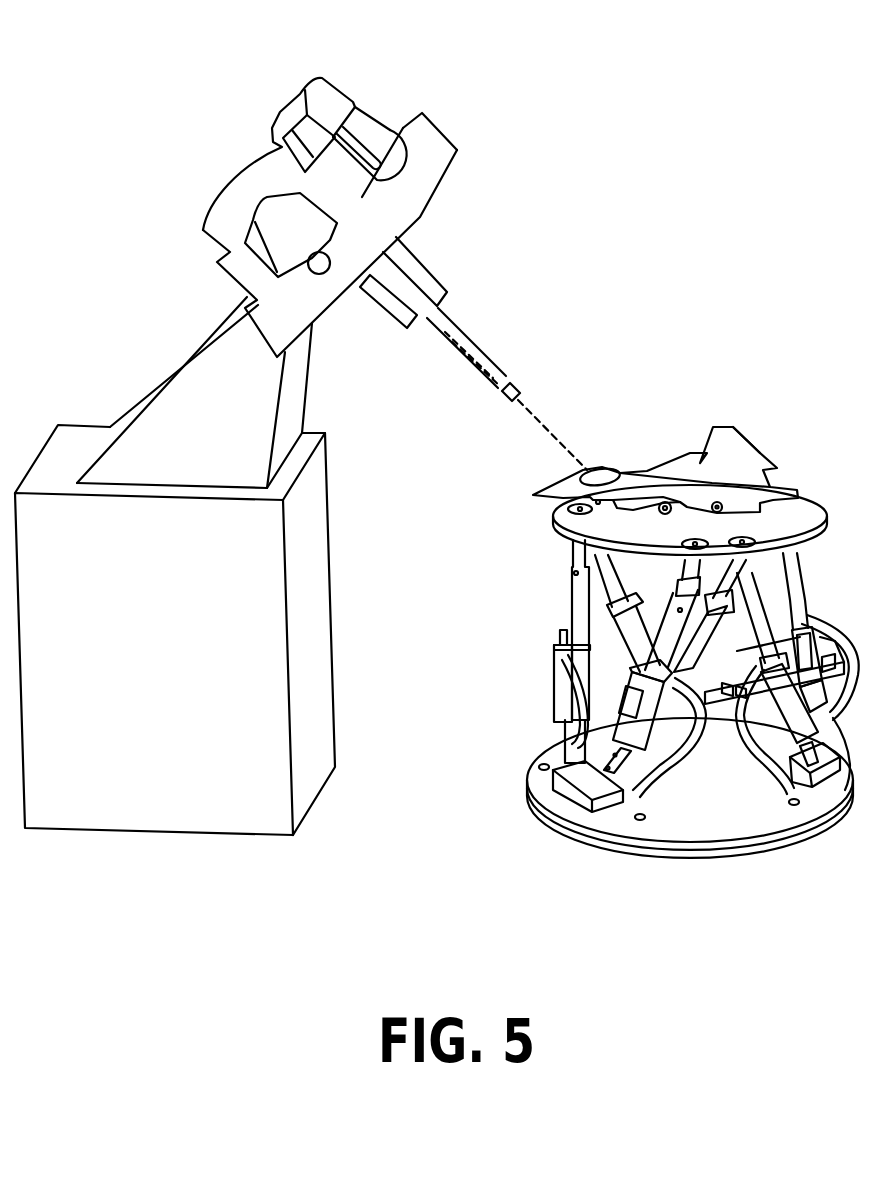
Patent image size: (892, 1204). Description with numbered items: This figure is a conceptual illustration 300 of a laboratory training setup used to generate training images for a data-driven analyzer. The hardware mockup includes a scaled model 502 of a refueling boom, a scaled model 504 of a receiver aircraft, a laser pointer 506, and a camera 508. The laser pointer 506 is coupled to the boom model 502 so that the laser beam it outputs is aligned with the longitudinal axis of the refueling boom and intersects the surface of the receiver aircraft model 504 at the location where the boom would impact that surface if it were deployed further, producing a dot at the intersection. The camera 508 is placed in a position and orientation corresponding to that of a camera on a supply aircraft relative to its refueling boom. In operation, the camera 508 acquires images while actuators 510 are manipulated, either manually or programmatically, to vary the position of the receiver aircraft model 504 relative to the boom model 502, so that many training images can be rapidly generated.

The testing system 300 is at (112, 56).
The camera 508 is at (428, 225).
The laser pointer 506 is at (472, 352).
The scaled model of a refueling boom 502 is at (512, 378).
The scaled model of a receiver aircraft 504 is at (760, 452).
The actuators 510 is at (536, 668).